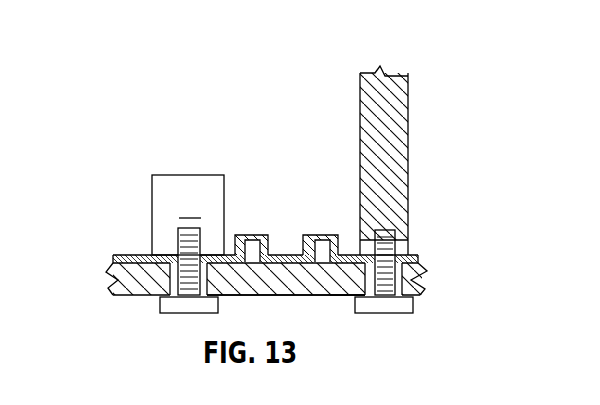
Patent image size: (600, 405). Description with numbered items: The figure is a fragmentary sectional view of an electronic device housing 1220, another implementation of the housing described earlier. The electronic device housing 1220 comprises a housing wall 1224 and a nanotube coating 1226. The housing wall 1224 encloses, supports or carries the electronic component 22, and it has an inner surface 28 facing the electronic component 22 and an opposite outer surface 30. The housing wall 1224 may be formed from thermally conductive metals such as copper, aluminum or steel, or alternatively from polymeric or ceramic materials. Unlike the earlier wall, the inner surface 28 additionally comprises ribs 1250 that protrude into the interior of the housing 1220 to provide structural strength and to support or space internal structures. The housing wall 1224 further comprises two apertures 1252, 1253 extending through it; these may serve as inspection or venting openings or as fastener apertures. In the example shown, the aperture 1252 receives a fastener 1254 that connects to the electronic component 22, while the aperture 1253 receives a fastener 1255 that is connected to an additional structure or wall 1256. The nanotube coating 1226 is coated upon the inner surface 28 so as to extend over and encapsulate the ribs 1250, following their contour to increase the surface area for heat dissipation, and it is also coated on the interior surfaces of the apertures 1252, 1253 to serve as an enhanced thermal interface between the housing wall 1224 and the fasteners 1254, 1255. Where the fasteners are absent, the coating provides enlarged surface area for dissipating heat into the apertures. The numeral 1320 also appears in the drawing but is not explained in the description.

The electronic device housing 1220 is at (162, 177).
The electronic component 22 is at (200, 175).
The nanotube coating 1226 is at (113, 257).
The housing wall 1224 is at (113, 306).
The ribs 1250 is at (317, 240).
The aperture 1252 is at (172, 282).
The fastener 1254 is at (192, 313).
The additional structure or wall 1256 is at (409, 186).
The aperture 1253 is at (418, 263).
The fastener 1255 is at (408, 322).
The inner surface 28 is at (308, 297).
The outer surface 30 is at (345, 297).
The assembly 1320 is at (442, 395).